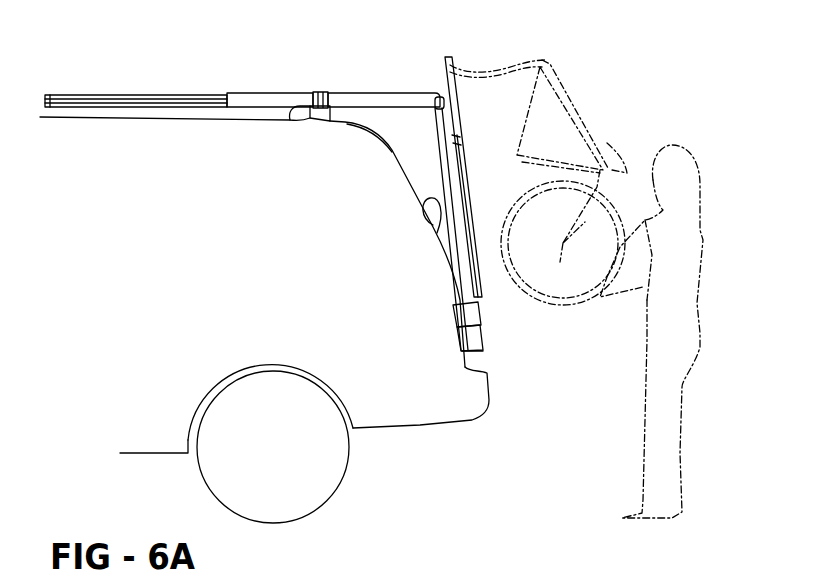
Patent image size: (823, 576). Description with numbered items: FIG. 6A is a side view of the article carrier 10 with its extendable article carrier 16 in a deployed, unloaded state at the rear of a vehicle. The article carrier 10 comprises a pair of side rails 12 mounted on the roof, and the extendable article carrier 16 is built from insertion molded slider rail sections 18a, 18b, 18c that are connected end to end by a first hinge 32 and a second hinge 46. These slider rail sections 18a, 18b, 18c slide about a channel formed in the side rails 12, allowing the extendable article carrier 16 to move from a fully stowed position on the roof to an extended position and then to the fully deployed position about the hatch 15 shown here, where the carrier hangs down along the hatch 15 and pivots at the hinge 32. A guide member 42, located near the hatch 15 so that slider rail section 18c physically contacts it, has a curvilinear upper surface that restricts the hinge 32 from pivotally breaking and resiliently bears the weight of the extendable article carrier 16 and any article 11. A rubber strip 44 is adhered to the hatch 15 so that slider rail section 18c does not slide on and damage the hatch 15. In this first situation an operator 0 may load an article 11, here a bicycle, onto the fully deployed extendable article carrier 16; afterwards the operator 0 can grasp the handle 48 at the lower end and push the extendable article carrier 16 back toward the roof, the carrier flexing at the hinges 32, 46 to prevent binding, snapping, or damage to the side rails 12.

The operator 0 is at (738, 197).
The article carrier 10 is at (277, 70).
The article 11 is at (592, 103).
The side rail 12 is at (103, 98).
The hatch 15 is at (437, 224).
The extendable article carrier 16 is at (437, 58).
The slider rail section 18a is at (248, 98).
The slider rail section 18b is at (352, 98).
The slider rail section 18c is at (437, 160).
The first hinge 32 is at (428, 78).
The guide member 42 is at (295, 121).
The rubber strip 44 is at (367, 137).
The second hinge 46 is at (314, 78).
The handle 48 is at (480, 353).